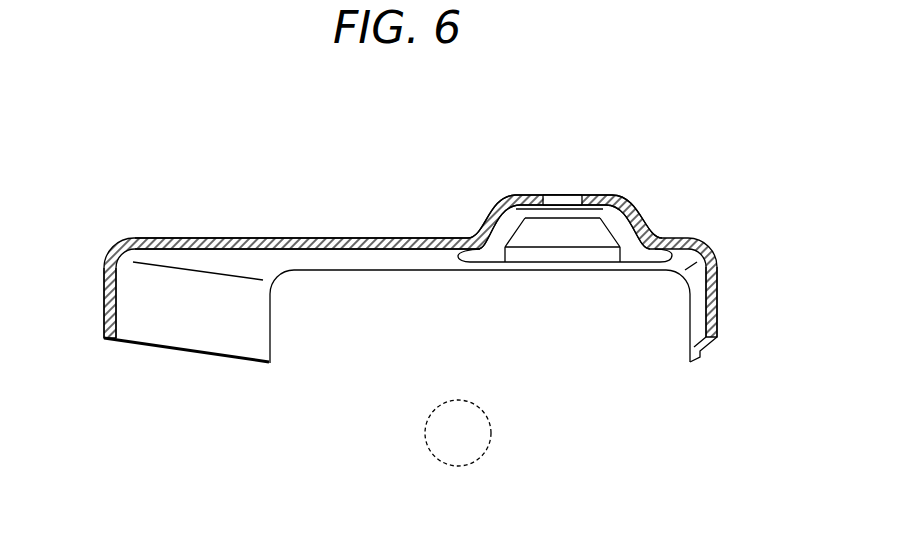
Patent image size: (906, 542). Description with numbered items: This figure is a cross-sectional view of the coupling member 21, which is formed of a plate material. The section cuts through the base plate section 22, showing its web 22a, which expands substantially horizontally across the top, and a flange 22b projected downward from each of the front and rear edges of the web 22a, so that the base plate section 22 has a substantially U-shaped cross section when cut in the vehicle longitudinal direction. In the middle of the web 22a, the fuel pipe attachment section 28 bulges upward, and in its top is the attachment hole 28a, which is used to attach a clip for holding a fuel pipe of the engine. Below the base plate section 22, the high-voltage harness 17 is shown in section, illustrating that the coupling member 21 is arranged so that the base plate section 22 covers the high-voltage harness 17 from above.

The coupling member 21 is at (411, 248).
The base plate section 22 is at (411, 248).
The web 22a is at (342, 240).
The flange 22b is at (104, 318).
The fuel pipe attachment section 28 is at (502, 203).
The attachment hole 28a is at (565, 194).
The high-voltage harness 17 is at (480, 462).